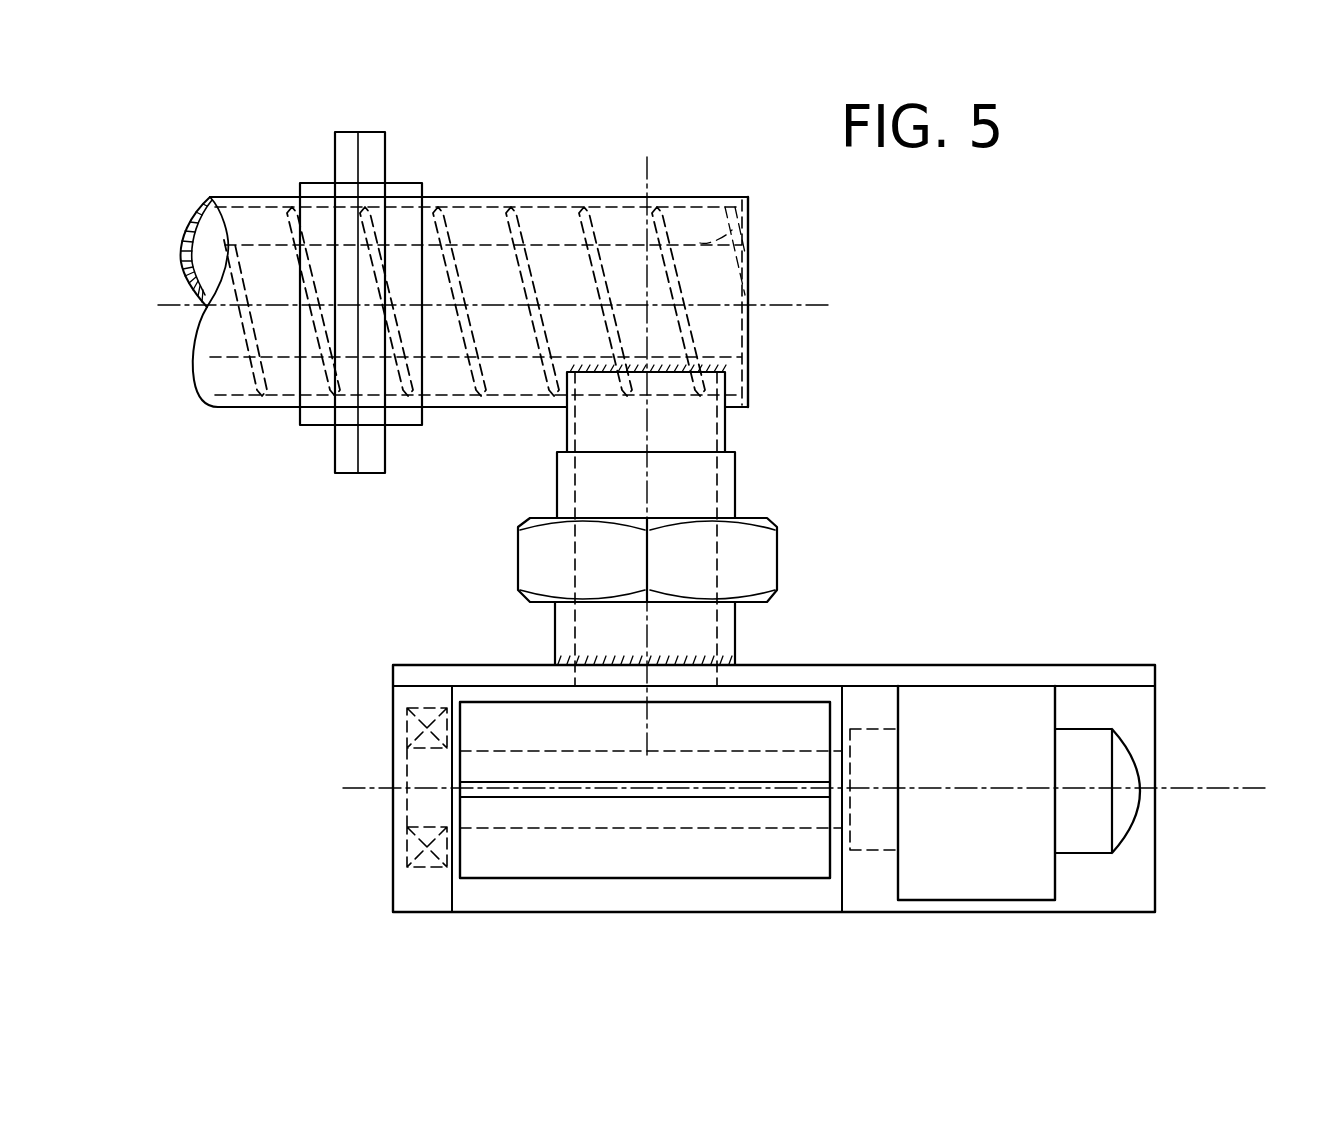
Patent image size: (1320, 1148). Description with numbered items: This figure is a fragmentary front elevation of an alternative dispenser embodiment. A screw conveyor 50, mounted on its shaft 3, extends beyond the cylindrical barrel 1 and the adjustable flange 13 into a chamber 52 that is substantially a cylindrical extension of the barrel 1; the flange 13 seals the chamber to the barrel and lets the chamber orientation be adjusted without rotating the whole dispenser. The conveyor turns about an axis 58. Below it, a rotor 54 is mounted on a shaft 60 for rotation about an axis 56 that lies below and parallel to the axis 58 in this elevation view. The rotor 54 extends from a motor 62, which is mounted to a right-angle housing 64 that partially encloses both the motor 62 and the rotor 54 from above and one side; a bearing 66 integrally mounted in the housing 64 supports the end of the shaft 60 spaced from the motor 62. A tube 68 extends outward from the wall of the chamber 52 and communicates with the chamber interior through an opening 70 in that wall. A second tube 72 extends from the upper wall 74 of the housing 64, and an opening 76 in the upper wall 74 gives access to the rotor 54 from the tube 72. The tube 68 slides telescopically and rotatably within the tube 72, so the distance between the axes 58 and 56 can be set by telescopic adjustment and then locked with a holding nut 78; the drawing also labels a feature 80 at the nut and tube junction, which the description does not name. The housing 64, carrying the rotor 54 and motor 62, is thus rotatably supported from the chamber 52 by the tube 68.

The cylindrical barrel 1 is at (233, 197).
The shaft 3 is at (752, 208).
The adjustable flange 13 is at (345, 132).
The screw conveyor 50 is at (466, 217).
The chamber 52 is at (674, 200).
The rotor 54 is at (771, 858).
The axis 56 is at (1181, 790).
The axis 58 is at (177, 301).
The shaft 60 is at (563, 829).
The motor 62 is at (944, 767).
The housing 64 is at (1155, 679).
The bearing 66 is at (425, 708).
The tube 68 is at (638, 392).
The opening 70 is at (716, 402).
The tube 72 is at (726, 632).
The upper wall 74 is at (854, 677).
The opening 76 is at (579, 672).
The holding nut 78 is at (540, 557).
The threaded section 80 is at (648, 497).